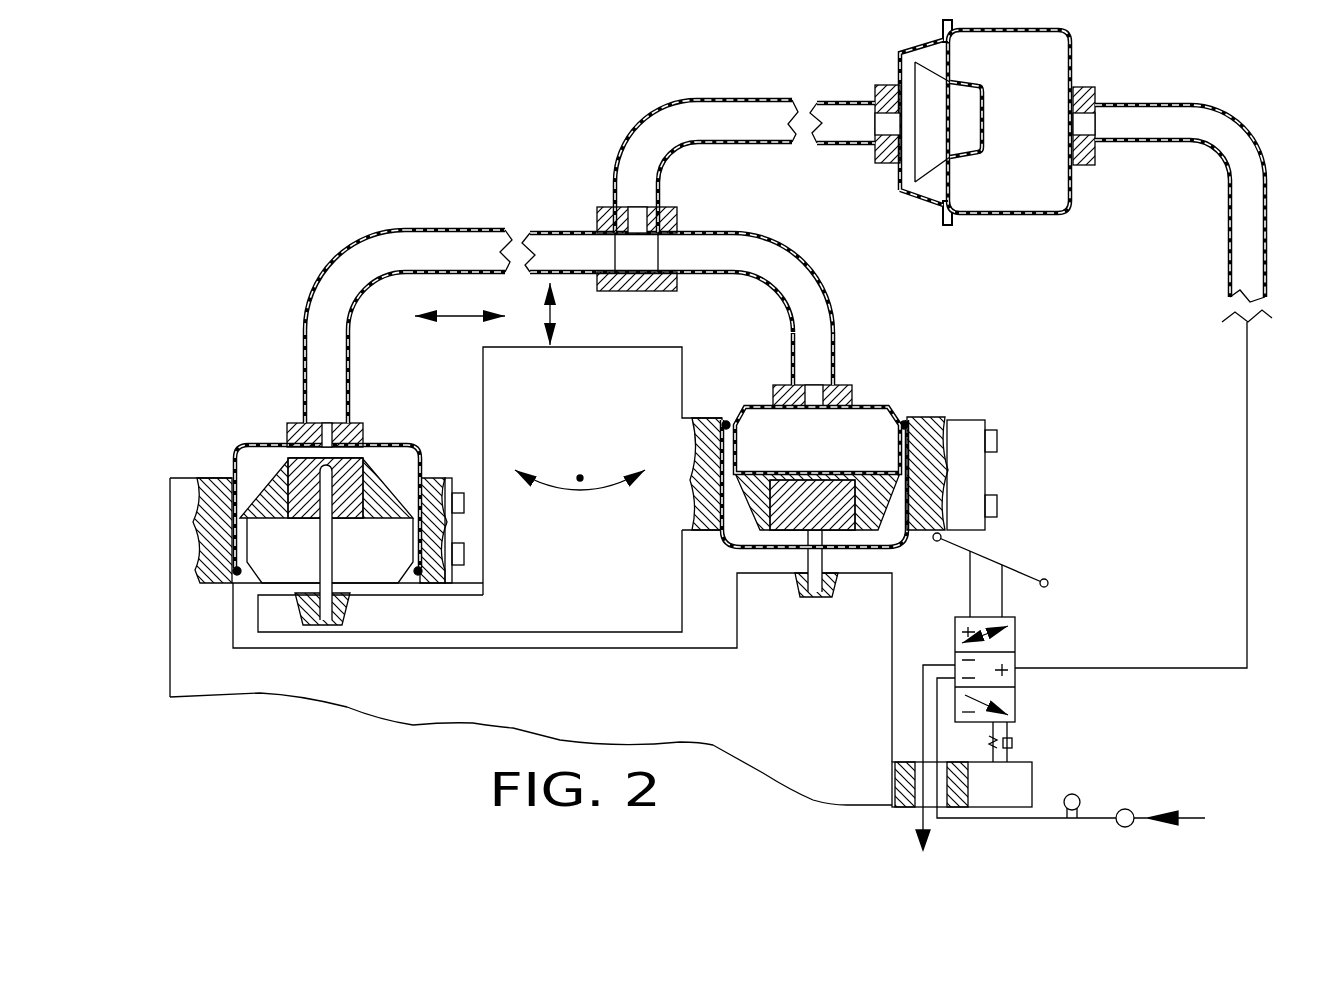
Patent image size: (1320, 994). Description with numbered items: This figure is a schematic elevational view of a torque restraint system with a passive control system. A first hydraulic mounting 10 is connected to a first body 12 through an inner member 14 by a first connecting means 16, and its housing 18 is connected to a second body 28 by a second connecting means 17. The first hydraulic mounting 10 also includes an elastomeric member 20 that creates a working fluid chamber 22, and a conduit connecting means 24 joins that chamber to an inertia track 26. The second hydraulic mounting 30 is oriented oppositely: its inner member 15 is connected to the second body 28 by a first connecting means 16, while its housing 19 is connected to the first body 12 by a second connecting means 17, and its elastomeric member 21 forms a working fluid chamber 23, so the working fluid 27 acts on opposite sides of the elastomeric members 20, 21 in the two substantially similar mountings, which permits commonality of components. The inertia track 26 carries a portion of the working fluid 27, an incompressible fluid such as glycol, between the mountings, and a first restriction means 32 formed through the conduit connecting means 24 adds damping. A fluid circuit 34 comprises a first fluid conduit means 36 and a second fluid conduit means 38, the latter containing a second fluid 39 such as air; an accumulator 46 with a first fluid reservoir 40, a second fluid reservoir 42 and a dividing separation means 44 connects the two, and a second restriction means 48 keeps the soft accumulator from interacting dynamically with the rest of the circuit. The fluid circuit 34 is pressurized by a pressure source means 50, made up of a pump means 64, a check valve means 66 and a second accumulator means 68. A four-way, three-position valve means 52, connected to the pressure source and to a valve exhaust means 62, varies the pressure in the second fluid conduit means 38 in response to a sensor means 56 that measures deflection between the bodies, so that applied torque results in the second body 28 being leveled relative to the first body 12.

The first hydraulic mounting 10 is at (312, 527).
The first body 12 is at (571, 417).
The inner member 14 is at (363, 523).
The inner member 15 is at (798, 537).
The first connecting means 16 is at (328, 546).
The second connecting means 17 is at (468, 560).
The housing 18 is at (417, 463).
The housing 19 is at (902, 550).
The elastomeric member 20 is at (268, 473).
The elastomeric member 21 is at (720, 532).
The working fluid chamber 22 is at (390, 463).
The working fluid chamber 23 is at (865, 443).
The conduit connecting means 24 is at (300, 420).
The inertia track 26 is at (340, 260).
The working fluid 27 is at (447, 253).
The second body 28 is at (808, 682).
The second hydraulic mounting 30 is at (894, 463).
The first restriction means 32 is at (327, 420).
The fluid circuit 34 is at (705, 214).
The first fluid conduit means 36 is at (575, 253).
The second fluid conduit means 38 is at (1247, 490).
The second fluid 39 is at (1200, 130).
The first fluid reservoir 40 is at (912, 72).
The second fluid reservoir 42 is at (1035, 72).
The separation means 44 is at (963, 82).
The accumulator 46 is at (1042, 158).
The second restriction means 48 is at (638, 213).
The pressure source means 50 is at (1112, 829).
The valve means 52 is at (1017, 640).
The sensor means 56 is at (1020, 563).
The valve exhaust means 62 is at (931, 770).
The pump means 64 is at (1182, 807).
The check valve means 66 is at (1137, 797).
The second accumulator means 68 is at (1080, 787).